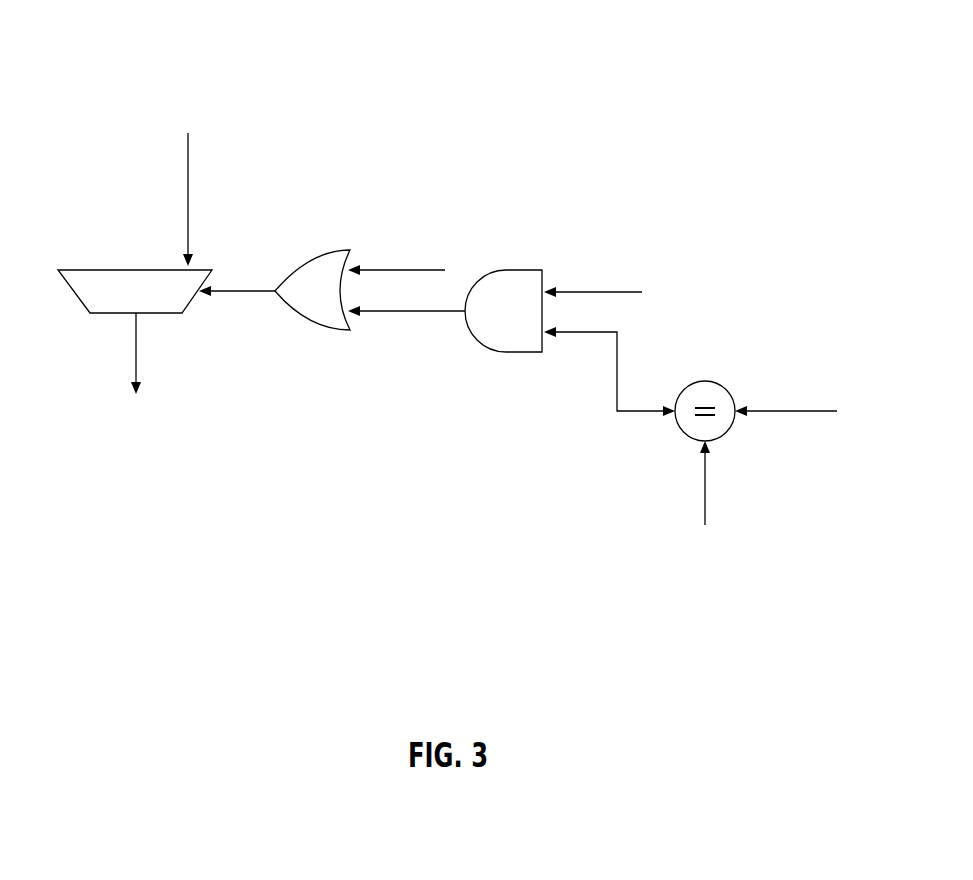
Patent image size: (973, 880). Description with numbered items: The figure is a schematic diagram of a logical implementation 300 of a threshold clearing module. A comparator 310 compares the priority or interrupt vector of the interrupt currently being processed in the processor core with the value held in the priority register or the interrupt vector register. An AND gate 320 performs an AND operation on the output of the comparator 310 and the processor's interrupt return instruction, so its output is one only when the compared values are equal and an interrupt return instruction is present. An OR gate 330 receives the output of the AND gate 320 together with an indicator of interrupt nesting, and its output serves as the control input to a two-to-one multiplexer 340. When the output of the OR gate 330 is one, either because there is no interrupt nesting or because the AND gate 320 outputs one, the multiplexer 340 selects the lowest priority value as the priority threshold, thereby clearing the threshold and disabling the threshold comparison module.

The logical implementation 300 is at (780, 48).
The comparator 310 is at (715, 428).
The AND gate 320 is at (510, 302).
The OR gate 330 is at (310, 300).
The 2-to-1 multiplexer 340 is at (132, 288).